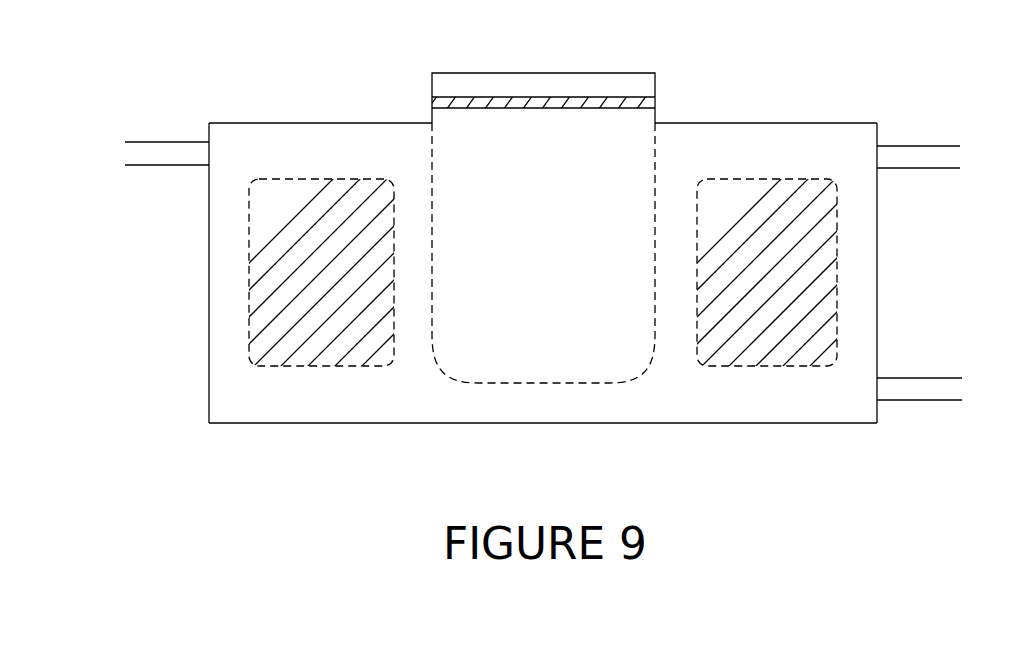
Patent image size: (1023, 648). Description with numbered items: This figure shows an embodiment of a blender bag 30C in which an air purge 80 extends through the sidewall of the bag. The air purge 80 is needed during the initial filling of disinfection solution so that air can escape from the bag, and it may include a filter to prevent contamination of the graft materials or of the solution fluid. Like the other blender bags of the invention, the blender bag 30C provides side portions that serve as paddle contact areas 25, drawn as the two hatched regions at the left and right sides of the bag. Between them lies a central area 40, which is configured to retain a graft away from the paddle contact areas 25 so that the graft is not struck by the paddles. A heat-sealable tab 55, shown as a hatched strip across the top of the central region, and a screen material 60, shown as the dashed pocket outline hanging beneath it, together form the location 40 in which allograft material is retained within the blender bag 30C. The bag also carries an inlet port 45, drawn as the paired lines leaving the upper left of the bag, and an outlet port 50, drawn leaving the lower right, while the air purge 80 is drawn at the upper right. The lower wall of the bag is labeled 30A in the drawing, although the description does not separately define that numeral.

The paddle contact areas 25 is at (310, 369).
The bottom wall of housing 30A is at (530, 423).
The blender bag 30C is at (329, 123).
The central area 40 is at (540, 176).
The inlet port 45 is at (152, 168).
The outlet port 50 is at (917, 402).
The heat-sealable tab 55 is at (660, 100).
The screen material 60 is at (653, 360).
The air purge 80 is at (918, 144).